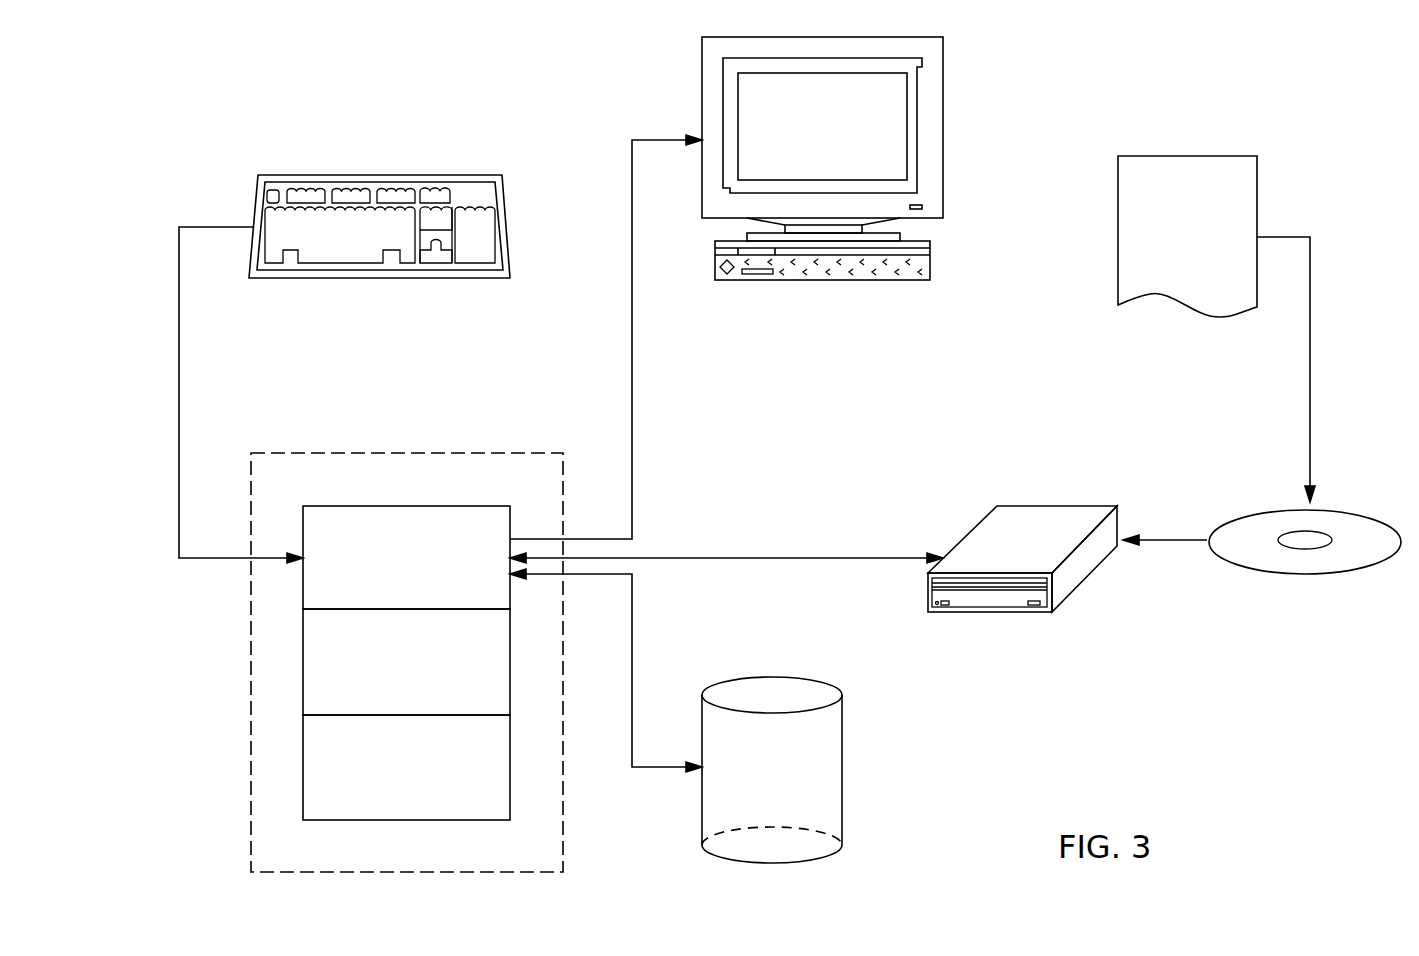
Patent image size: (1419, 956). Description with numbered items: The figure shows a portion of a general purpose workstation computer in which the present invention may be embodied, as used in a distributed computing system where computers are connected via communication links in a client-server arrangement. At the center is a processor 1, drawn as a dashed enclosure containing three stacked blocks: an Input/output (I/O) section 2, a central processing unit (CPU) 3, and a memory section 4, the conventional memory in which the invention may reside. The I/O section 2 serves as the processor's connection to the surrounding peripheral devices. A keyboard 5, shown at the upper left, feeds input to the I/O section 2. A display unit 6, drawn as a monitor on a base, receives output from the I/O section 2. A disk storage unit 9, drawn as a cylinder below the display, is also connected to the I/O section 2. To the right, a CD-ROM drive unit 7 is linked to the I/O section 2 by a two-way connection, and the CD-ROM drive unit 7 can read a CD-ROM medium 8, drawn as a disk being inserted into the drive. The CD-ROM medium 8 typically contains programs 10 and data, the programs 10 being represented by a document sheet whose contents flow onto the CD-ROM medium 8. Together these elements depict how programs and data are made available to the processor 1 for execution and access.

The processor 1 is at (450, 452).
The Input/output section 2 is at (317, 518).
The central processing unit 3 is at (308, 672).
The memory section 4 is at (313, 768).
The keyboard 5 is at (510, 227).
The display unit 6 is at (945, 103).
The CD-ROM drive unit 7 is at (1055, 506).
The CD-ROM medium 8 is at (1340, 512).
The disk storage unit 9 is at (770, 677).
The programs 10 is at (1118, 192).